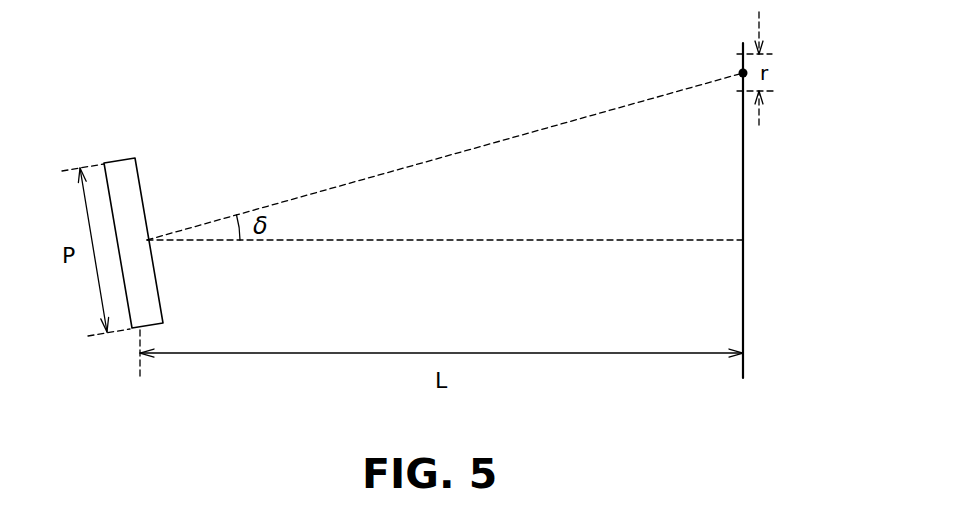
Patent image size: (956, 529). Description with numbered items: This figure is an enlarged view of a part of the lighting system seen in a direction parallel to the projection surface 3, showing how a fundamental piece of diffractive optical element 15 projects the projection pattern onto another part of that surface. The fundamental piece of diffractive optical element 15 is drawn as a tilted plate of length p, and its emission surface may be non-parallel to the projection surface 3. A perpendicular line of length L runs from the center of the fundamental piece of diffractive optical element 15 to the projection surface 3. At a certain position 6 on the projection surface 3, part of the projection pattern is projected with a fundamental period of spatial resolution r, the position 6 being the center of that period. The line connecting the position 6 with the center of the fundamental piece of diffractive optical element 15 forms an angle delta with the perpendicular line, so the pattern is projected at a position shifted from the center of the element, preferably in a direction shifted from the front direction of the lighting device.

The fundamental piece of diffractive optical element 15 is at (123, 161).
The projection surface 3 is at (744, 305).
The position 6 is at (742, 74).